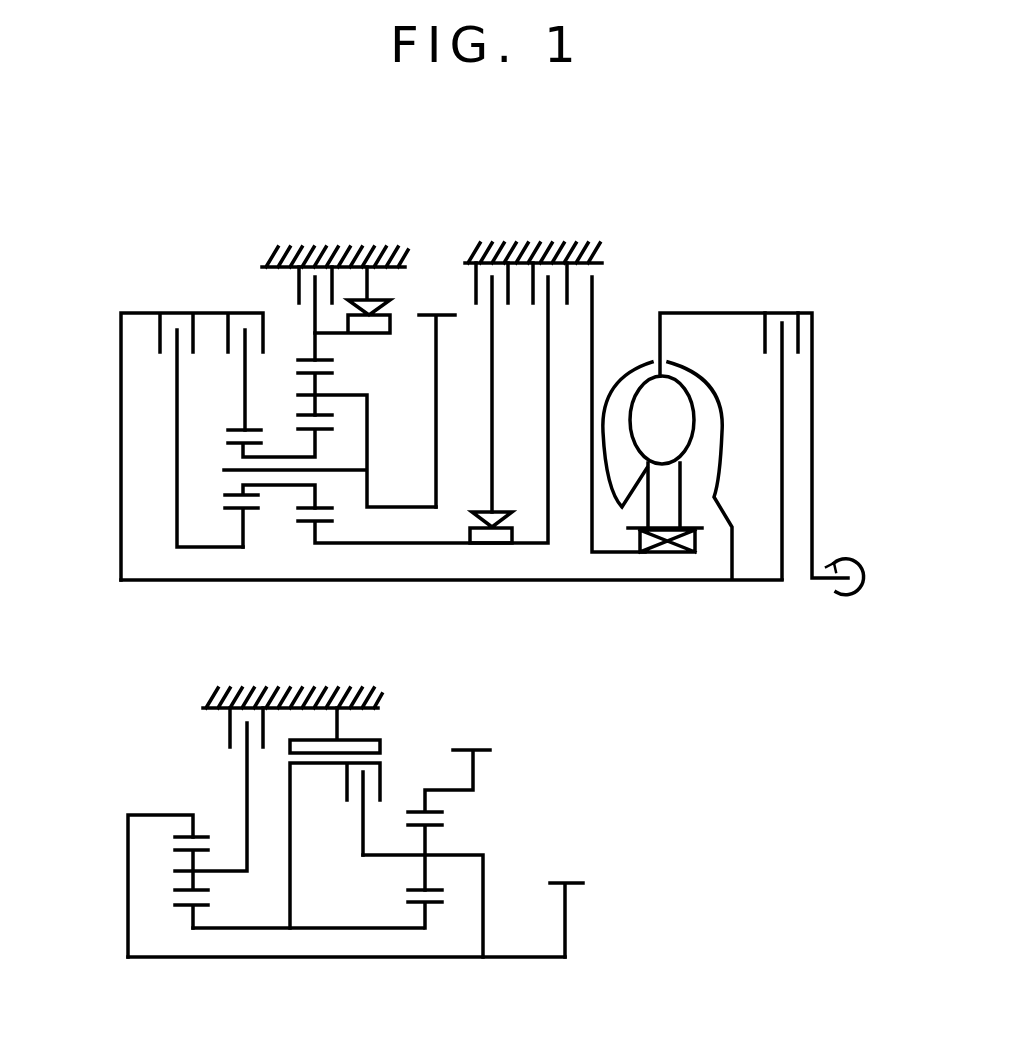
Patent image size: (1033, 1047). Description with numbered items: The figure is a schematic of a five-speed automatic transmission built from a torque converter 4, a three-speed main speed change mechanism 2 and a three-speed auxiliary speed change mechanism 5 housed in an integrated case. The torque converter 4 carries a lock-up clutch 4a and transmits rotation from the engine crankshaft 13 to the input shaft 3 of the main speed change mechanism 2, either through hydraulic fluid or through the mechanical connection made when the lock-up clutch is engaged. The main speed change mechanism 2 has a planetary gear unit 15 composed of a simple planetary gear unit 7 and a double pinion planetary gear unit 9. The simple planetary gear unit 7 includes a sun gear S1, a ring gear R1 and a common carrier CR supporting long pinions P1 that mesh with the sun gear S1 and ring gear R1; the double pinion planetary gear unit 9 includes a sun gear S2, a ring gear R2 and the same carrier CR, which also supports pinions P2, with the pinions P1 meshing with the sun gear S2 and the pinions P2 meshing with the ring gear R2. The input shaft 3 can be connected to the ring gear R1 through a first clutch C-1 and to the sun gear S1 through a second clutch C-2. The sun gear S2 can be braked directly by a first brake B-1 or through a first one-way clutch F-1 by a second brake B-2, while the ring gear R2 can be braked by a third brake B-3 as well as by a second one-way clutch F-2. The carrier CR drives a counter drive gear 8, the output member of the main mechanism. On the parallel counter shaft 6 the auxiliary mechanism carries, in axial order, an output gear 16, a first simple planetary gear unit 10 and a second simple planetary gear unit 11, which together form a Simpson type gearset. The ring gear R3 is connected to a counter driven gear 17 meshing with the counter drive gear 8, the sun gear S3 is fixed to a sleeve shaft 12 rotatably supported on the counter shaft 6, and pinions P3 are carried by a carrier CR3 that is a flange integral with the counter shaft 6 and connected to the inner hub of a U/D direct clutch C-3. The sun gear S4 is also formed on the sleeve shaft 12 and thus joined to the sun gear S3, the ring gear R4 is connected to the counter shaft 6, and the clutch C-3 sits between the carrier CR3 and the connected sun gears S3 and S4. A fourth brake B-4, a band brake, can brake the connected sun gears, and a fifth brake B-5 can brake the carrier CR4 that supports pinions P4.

The main speed change mechanism 2 is at (161, 411).
The input shaft 3 is at (537, 582).
The torque converter 4 is at (725, 410).
The lock-up clutch 4a is at (782, 312).
The auxiliary speed change mechanism 5 is at (145, 997).
The counter shaft 6 is at (450, 960).
The simple planetary gear unit 7 is at (266, 415).
The counter drive gear 8 is at (428, 313).
The double pinion planetary gear unit 9 is at (392, 415).
The first simple planetary gear unit 10 is at (422, 848).
The second simple planetary gear unit 11 is at (177, 832).
The sleeve shaft 12 is at (305, 930).
The engine crankshaft 13 is at (822, 582).
The planetary gear unit 15 is at (370, 392).
The output gear 16 is at (583, 882).
The counter driven gear 17 is at (463, 749).
The first clutch C-1 is at (233, 356).
The second clutch C-2 is at (186, 415).
The U/D direct clutch C-3 is at (362, 841).
The first brake B-1 is at (589, 370).
The second brake B-2 is at (533, 350).
The third brake B-3 is at (335, 274).
The fourth brake B-4 is at (335, 692).
The fifth brake B-5 is at (292, 689).
The first one-way clutch F-1 is at (490, 544).
The second one-way clutch F-2 is at (357, 268).
The ring gear R1 is at (242, 427).
The long pinions P1 is at (263, 455).
The sun gear S1 is at (252, 512).
The ring gear R2 is at (335, 357).
The pinions P2 is at (335, 373).
The sun gear S2 is at (302, 525).
The common carrier CR is at (370, 420).
The ring gear R3 is at (440, 810).
The pinions P3 is at (428, 868).
The sun gear S3 is at (408, 900).
The carrier CR3 is at (485, 890).
The ring gear R4 is at (210, 834).
The pinions P4 is at (175, 850).
The sun gear S4 is at (208, 905).
The carrier CR4 is at (245, 795).